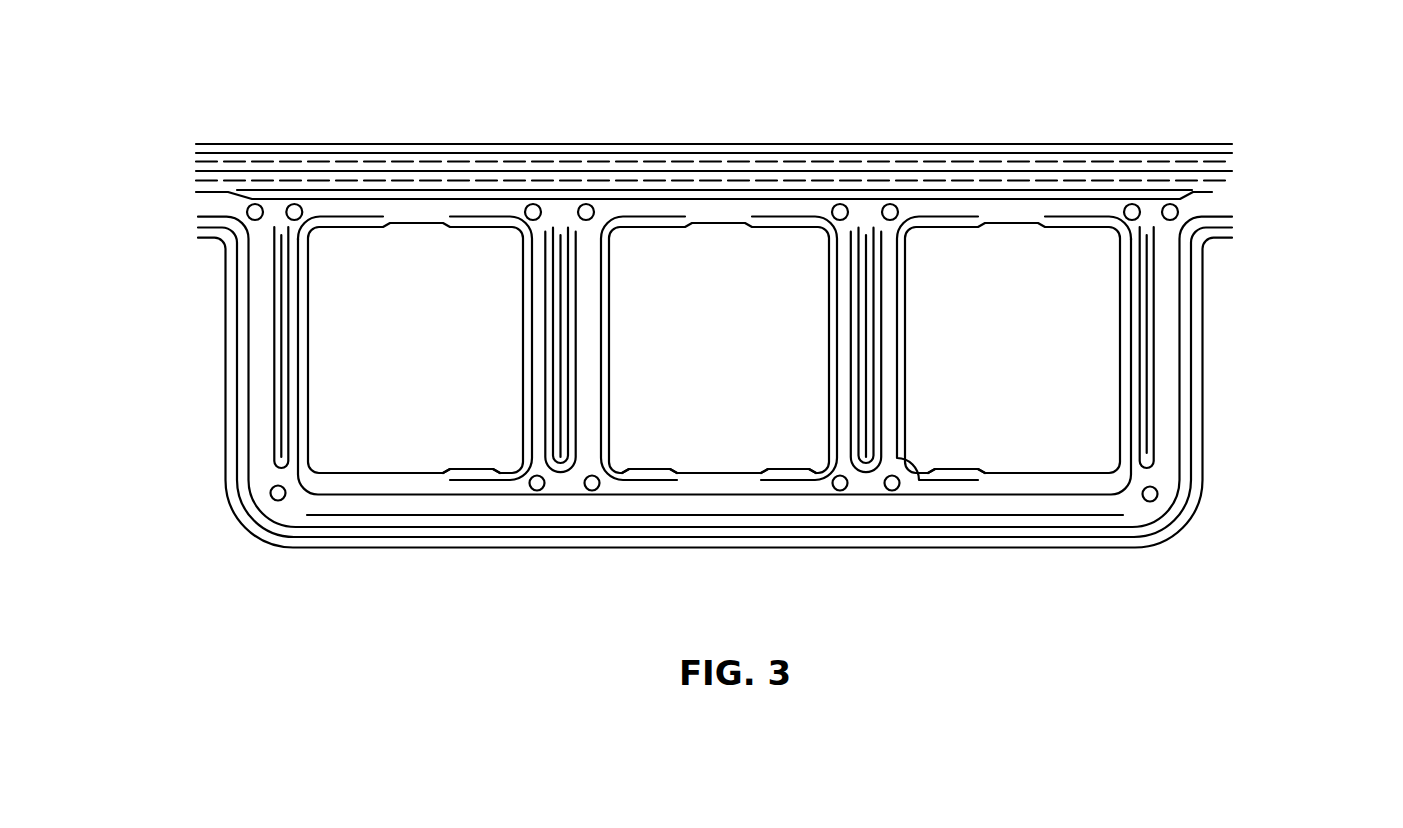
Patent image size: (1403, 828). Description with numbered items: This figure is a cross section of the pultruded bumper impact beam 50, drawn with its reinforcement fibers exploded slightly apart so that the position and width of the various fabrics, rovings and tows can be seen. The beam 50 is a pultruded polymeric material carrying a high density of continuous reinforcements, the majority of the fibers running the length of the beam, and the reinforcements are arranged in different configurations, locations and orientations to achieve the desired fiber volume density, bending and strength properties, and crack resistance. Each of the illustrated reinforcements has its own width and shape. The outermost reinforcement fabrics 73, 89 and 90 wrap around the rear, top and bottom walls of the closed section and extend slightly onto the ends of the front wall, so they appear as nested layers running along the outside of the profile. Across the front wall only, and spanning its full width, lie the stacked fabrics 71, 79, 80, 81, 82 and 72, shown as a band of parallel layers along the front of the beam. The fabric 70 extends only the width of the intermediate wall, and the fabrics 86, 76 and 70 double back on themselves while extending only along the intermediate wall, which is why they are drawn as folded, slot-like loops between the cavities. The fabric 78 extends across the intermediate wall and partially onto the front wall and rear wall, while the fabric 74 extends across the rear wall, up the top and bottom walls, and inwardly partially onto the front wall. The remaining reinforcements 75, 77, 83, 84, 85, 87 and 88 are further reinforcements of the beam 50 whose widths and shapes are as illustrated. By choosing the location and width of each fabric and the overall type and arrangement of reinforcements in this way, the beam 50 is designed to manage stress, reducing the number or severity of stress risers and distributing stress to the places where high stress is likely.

The bumper impact beam 50 is at (392, 112).
The fabric 70 is at (655, 190).
The fabric 71 is at (1101, 144).
The fabric 72 is at (1212, 192).
The reinforcement fabric 73 is at (1207, 292).
The fabric 74 is at (1072, 216).
The reinforcement 75 is at (498, 474).
The fabric 76 is at (617, 475).
The reinforcement 77 is at (810, 475).
The fabric 78 is at (925, 476).
The fabric 79 is at (1133, 152).
The fabric 80 is at (1164, 161).
The fabric 81 is at (1198, 170).
The fabric 82 is at (1225, 181).
The reinforcement 83 is at (292, 330).
The reinforcement 84 is at (545, 340).
The reinforcement 85 is at (553, 320).
The fabric 86 is at (852, 357).
The reinforcement 87 is at (860, 320).
The reinforcement 88 is at (1141, 340).
The reinforcement fabric 89 is at (1195, 321).
The reinforcement fabric 90 is at (1183, 352).